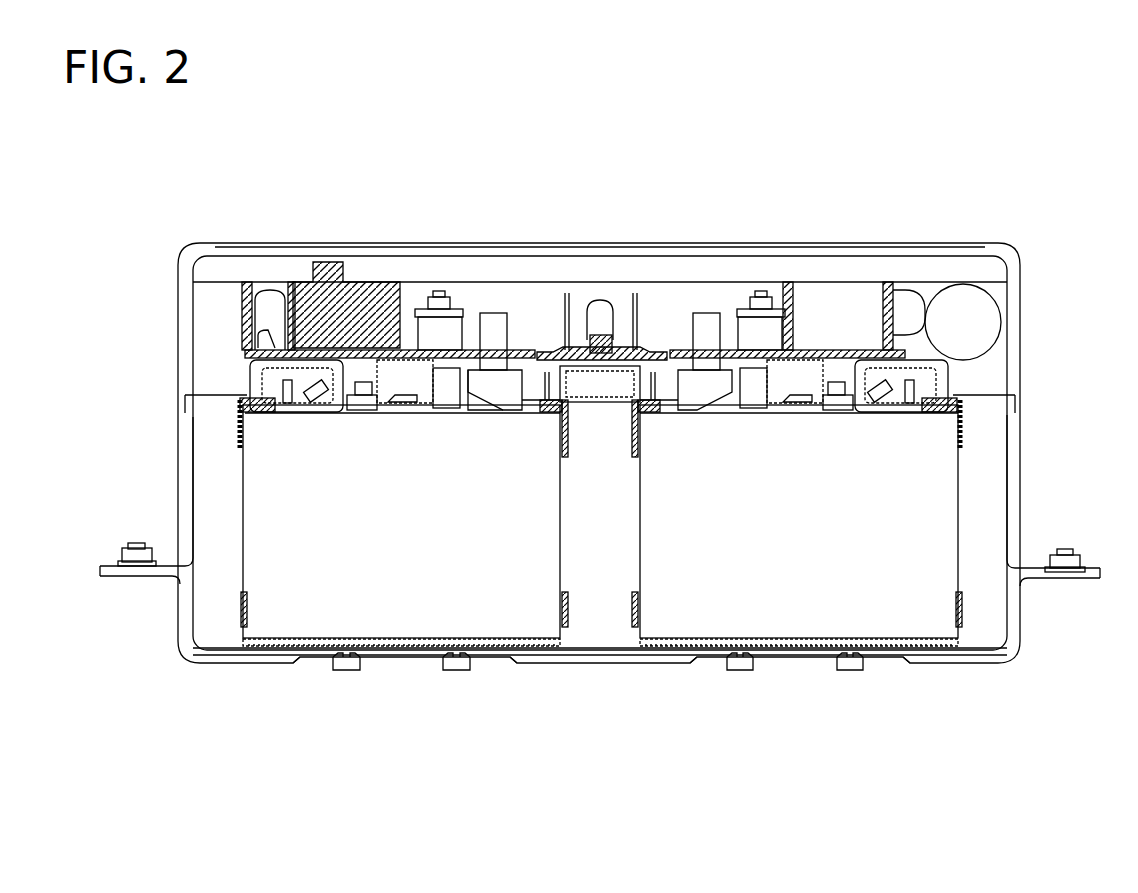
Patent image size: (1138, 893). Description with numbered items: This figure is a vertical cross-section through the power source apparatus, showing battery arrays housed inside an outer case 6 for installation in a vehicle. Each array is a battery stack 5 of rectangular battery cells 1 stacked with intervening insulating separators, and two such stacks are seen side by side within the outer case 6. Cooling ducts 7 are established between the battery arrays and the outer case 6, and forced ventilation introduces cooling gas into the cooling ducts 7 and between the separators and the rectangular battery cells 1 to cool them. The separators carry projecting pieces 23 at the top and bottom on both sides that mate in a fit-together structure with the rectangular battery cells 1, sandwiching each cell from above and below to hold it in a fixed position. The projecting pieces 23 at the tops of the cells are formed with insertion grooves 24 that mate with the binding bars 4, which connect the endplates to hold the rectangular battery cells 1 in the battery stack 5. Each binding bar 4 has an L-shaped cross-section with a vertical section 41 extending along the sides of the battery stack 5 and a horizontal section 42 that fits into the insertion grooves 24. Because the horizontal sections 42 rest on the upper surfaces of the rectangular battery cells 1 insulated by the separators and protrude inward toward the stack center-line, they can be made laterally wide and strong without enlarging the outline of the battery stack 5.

The rectangular battery cell 1 is at (412, 534).
The binding bar 4 is at (568, 440).
The battery stack 5 is at (198, 632).
The outer case 6 is at (612, 243).
The cooling duct 7 is at (178, 510).
The projecting piece 23 is at (262, 417).
The insertion groove 24 is at (285, 415).
The vertical section 41 is at (255, 412).
The horizontal section 42 is at (250, 380).